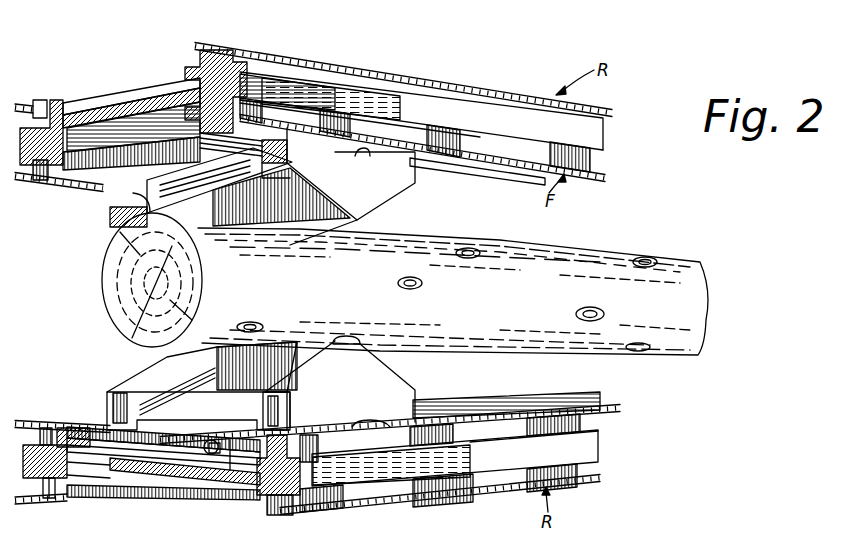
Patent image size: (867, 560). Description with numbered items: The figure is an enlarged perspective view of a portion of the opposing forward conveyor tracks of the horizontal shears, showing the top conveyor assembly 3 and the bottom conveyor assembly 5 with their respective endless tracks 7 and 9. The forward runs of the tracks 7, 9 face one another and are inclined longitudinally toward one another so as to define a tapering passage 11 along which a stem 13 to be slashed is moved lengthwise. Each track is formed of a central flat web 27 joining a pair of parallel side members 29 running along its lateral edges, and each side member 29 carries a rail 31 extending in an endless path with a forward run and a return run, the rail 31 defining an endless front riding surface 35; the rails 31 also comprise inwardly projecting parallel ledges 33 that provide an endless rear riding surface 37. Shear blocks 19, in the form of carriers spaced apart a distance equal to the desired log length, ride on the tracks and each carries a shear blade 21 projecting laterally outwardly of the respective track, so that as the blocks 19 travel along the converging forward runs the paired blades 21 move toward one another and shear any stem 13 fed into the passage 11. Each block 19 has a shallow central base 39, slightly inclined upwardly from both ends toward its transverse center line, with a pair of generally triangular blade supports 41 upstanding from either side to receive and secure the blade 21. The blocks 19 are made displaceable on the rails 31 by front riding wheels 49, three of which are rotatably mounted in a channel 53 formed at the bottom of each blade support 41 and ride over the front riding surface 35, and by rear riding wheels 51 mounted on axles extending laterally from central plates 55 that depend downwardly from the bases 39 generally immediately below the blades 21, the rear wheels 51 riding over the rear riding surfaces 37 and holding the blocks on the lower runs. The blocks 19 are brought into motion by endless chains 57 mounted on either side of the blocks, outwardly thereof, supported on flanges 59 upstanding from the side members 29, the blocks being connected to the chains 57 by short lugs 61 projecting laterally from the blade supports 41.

The top conveyor assembly 3 is at (603, 135).
The bottom conveyor assembly 5 is at (603, 441).
The endless track 7 is at (482, 104).
The endless track 9 is at (508, 465).
The tapering passage 11 is at (516, 228).
The stem 13 is at (690, 274).
The shear block 19 is at (398, 172).
The shear blade 21 is at (272, 218).
The central flat web 27 is at (130, 150).
The side member 29 is at (40, 128).
The rail 31 is at (85, 112).
The ledge 33 is at (192, 64).
The front riding surface 35 is at (60, 100).
The rear riding surface 37 is at (200, 117).
The central base 39 is at (226, 218).
The blade support 41 is at (385, 192).
The front riding wheel 49 is at (285, 150).
The rear riding wheel 51 is at (200, 465).
The channel 53 is at (292, 160).
The central plate 55 is at (232, 470).
The endless chain 57 is at (605, 172).
The flange 59 is at (560, 405).
The lug 61 is at (360, 156).